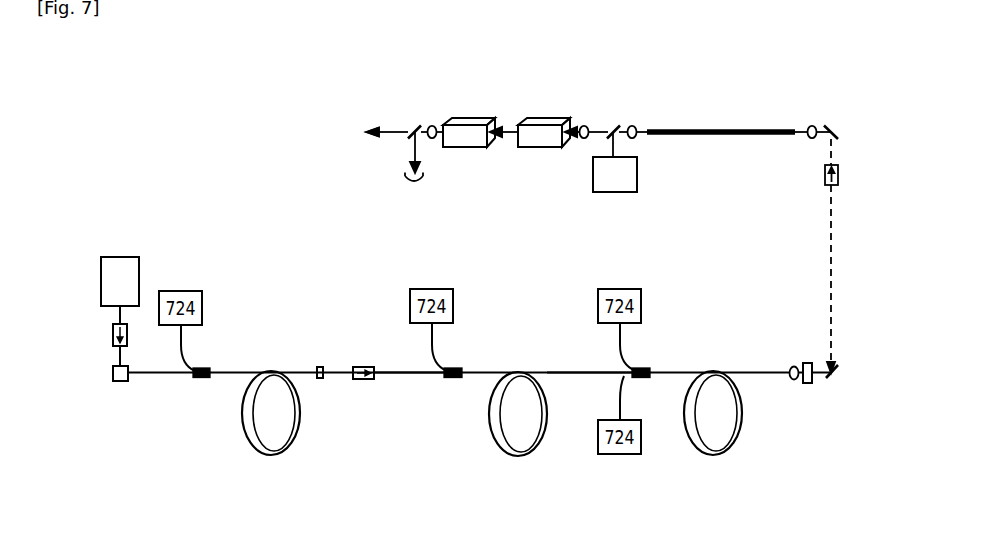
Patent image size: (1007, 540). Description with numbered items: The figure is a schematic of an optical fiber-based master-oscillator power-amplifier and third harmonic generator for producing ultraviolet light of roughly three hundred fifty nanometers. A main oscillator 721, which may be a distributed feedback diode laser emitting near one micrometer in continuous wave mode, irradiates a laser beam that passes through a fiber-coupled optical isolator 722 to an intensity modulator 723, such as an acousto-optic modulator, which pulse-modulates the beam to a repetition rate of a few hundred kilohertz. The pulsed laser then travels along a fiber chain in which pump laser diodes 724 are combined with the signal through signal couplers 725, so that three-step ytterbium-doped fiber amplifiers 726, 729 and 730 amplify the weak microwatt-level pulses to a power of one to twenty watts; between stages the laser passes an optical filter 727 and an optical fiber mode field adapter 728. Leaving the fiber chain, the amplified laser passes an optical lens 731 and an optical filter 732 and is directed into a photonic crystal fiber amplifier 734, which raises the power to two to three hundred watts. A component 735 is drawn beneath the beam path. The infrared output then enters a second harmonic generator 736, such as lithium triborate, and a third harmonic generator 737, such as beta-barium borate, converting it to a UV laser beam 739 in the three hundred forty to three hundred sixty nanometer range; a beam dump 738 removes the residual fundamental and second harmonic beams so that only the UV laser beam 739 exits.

The main oscillator 721 is at (120, 290).
The optical isolator 722 is at (112, 338).
The intensity modulator 723 is at (111, 374).
The pump laser diode 724 is at (400, 371).
The signal coupler 725 is at (203, 379).
The ytterbium-doped fiber amplifier 726 is at (271, 413).
The optical filter 727 is at (320, 379).
The optical fiber mode field adapter 728 is at (400, 374).
The ytterbium-doped fiber amplifier 729 is at (518, 414).
The ytterbium-doped fiber amplifier 730 is at (713, 413).
The optical lens 731 is at (792, 380).
The optical filter 732 is at (808, 384).
The photonic crystal fiber amplifier 734 is at (677, 123).
The detector 735 is at (615, 174).
The second harmonic generator 736 is at (532, 116).
The third harmonic generator 737 is at (456, 116).
The beam dump 738 is at (414, 182).
The UV laser beam 739 is at (383, 128).